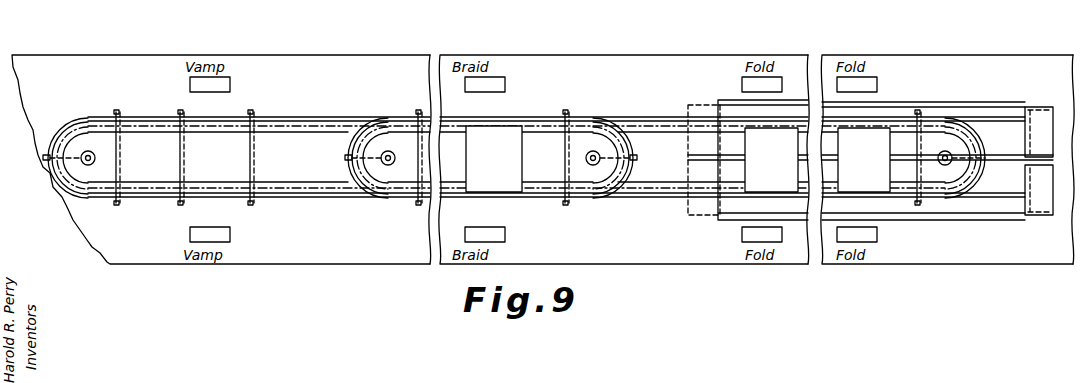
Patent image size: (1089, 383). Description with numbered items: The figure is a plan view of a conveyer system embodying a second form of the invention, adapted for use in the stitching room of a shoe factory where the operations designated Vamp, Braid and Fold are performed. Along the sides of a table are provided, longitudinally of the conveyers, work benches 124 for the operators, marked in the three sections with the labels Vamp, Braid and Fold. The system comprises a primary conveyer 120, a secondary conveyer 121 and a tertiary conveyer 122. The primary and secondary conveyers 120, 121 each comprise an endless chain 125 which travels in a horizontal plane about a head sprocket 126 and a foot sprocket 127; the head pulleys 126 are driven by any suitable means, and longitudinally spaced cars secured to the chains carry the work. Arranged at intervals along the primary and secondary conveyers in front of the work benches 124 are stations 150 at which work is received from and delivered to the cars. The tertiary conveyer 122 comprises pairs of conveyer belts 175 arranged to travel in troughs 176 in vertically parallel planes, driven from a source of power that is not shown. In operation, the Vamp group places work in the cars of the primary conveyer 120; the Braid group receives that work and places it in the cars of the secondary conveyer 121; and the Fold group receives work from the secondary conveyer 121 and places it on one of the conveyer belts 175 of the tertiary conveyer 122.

The primary conveyer 120 is at (272, 195).
The secondary conveyer 121 is at (540, 124).
The tertiary conveyer 122 is at (941, 114).
The work benches 124 is at (537, 158).
The endless chain 125 is at (293, 125).
The head sprocket 126 is at (620, 186).
The foot sprocket 127 is at (128, 170).
The stations 150 is at (678, 159).
The conveyer belts 175 is at (1015, 161).
The troughs 176 is at (1006, 104).